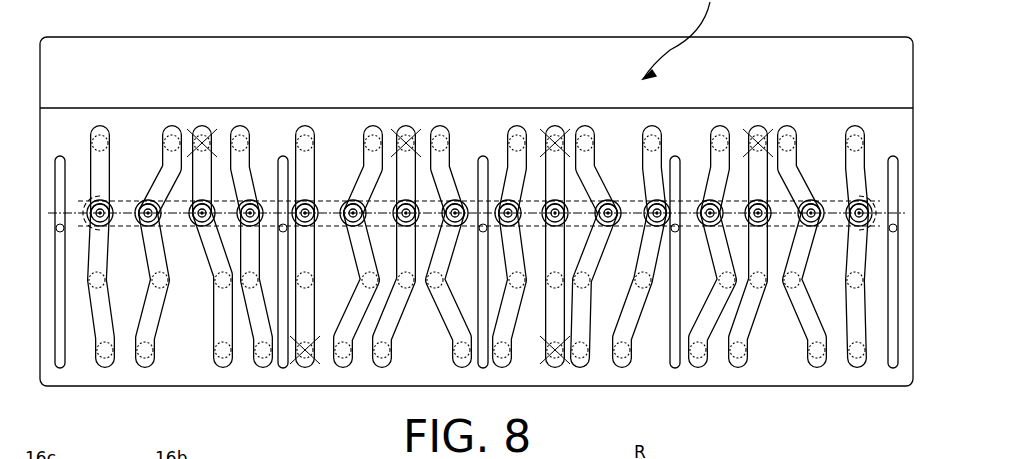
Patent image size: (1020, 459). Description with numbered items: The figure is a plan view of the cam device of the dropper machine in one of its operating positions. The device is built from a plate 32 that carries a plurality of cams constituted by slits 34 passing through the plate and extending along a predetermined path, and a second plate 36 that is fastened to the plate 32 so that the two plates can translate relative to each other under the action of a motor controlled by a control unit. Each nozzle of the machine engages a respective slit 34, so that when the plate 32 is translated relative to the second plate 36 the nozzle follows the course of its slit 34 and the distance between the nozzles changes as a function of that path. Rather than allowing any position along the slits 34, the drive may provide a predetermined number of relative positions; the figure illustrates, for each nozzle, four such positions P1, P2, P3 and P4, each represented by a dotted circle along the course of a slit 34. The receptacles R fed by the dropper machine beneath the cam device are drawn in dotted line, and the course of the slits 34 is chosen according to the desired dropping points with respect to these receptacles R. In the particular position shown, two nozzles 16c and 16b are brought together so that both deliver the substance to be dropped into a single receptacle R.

The nozzle 16b is at (163, 232).
The nozzle 16c is at (88, 200).
The plate 32 is at (877, 365).
The slit 34 is at (235, 125).
The second plate 36 is at (790, 62).
The first position P1 is at (105, 195).
The second position P2 is at (107, 298).
The third position P3 is at (97, 290).
The fourth position P4 is at (123, 250).
The receptacle R is at (130, 200).